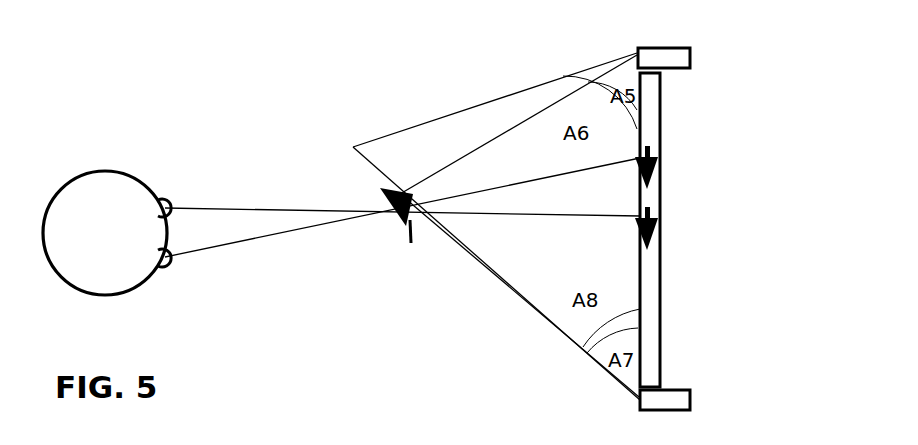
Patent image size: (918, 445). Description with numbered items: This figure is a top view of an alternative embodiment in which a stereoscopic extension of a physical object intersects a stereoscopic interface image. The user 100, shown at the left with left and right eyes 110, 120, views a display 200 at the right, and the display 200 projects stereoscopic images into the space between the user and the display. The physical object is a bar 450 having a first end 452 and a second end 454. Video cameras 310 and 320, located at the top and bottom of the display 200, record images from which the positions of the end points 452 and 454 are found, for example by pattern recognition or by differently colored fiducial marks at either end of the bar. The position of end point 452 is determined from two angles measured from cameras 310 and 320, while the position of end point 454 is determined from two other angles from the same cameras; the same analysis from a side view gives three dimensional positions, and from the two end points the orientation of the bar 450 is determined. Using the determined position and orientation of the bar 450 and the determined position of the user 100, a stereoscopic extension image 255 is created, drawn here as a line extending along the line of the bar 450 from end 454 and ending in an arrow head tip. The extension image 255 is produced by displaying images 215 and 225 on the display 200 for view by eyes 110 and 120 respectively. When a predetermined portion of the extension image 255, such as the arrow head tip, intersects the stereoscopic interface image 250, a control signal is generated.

The user 100 is at (100, 171).
The left eye 110 is at (163, 191).
The right eye 120 is at (161, 274).
The display 200 is at (661, 138).
The image for left eye 215 is at (661, 228).
The image for right eye 225 is at (661, 167).
The stereoscopic interface image 250 is at (401, 237).
The stereoscopic extension image 255 is at (370, 217).
The video camera 310 is at (692, 56).
The video camera 320 is at (691, 403).
The bar 450 is at (362, 171).
The first end 452 is at (353, 147).
The second end 454 is at (378, 193).